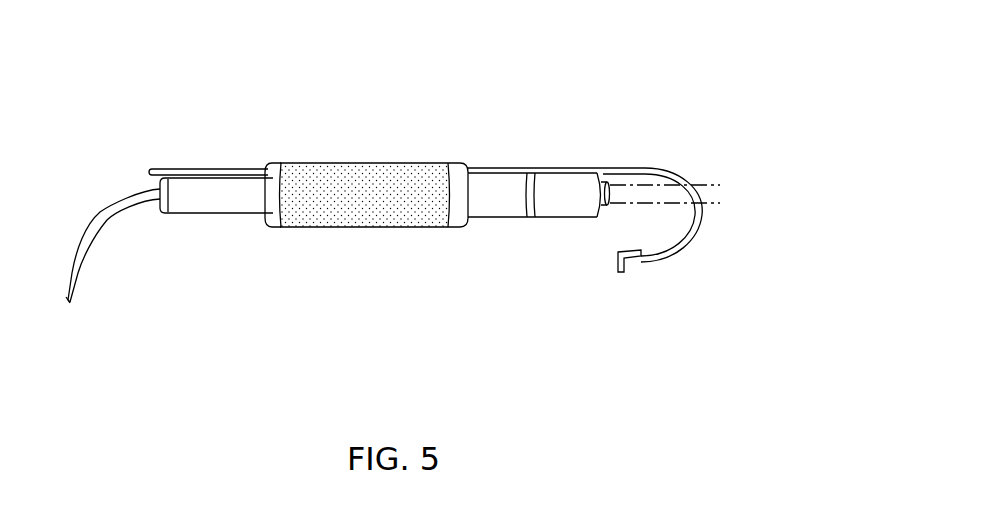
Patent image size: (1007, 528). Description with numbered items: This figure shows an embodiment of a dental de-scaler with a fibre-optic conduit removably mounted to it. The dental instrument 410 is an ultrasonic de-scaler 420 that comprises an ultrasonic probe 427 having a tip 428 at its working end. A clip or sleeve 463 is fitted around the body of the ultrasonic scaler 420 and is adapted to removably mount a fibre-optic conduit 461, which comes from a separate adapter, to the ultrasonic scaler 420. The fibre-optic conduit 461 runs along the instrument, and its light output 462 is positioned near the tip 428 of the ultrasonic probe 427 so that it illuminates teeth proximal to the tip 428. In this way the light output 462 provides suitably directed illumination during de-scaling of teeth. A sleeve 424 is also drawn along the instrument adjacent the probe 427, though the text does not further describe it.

The dental instrument 410 is at (397, 101).
The ultrasonic de-scaler 420 is at (503, 152).
The sleeve 424 is at (245, 215).
The ultrasonic probe 427 is at (100, 212).
The tip 428 is at (68, 304).
The fibre-optic conduit 461 is at (248, 168).
The light output 462 is at (150, 168).
The clip or sleeve 463 is at (373, 226).